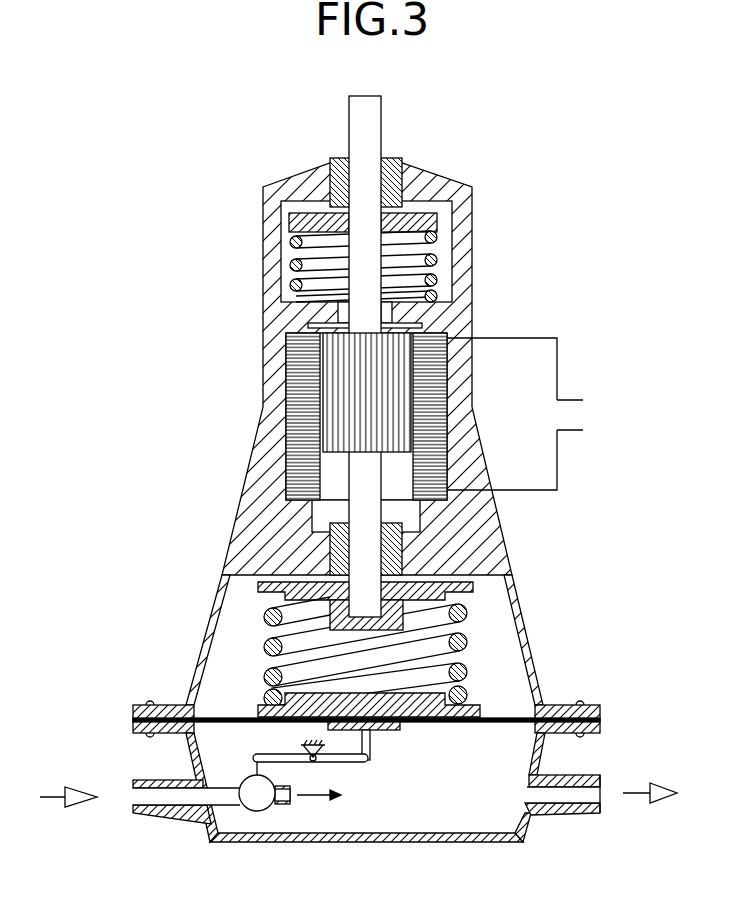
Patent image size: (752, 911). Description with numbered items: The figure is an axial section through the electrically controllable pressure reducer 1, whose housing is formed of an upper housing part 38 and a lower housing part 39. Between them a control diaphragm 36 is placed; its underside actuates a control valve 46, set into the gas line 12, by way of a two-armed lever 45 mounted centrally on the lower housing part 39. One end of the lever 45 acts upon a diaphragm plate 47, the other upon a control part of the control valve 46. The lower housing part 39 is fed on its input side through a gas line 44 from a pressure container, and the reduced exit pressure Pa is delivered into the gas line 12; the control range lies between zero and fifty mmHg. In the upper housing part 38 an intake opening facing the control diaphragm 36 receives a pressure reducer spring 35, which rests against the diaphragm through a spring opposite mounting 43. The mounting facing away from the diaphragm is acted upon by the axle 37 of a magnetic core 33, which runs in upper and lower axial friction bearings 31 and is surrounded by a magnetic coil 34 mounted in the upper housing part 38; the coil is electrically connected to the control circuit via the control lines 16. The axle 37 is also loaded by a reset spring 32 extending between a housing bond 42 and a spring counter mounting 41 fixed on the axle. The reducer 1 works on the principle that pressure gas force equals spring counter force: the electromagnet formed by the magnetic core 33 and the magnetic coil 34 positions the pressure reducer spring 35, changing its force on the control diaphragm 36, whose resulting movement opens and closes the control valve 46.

The electrically controllable pressure reducer 1 is at (242, 453).
The gas line 12 is at (600, 790).
The control lines 16 is at (583, 400).
The axial friction bearings 31 is at (404, 183).
The reset spring 32 is at (437, 258).
The magnetic core 33 is at (338, 385).
The magnetic coil 34 is at (292, 407).
The pressure reducer spring 35 is at (462, 642).
The control diaphragm 36 is at (232, 716).
The axle 37 is at (370, 135).
The upper housing part 38 is at (472, 379).
The lower housing part 39 is at (470, 845).
The spring counter mounting 41 is at (430, 211).
The housing bond 42 is at (435, 318).
The spring opposite mounting 43 is at (462, 692).
The inlet pipe 44 is at (148, 782).
The two-armed lever 45 is at (288, 760).
The control valve 46 is at (268, 803).
The diaphragm plate 47 is at (392, 733).